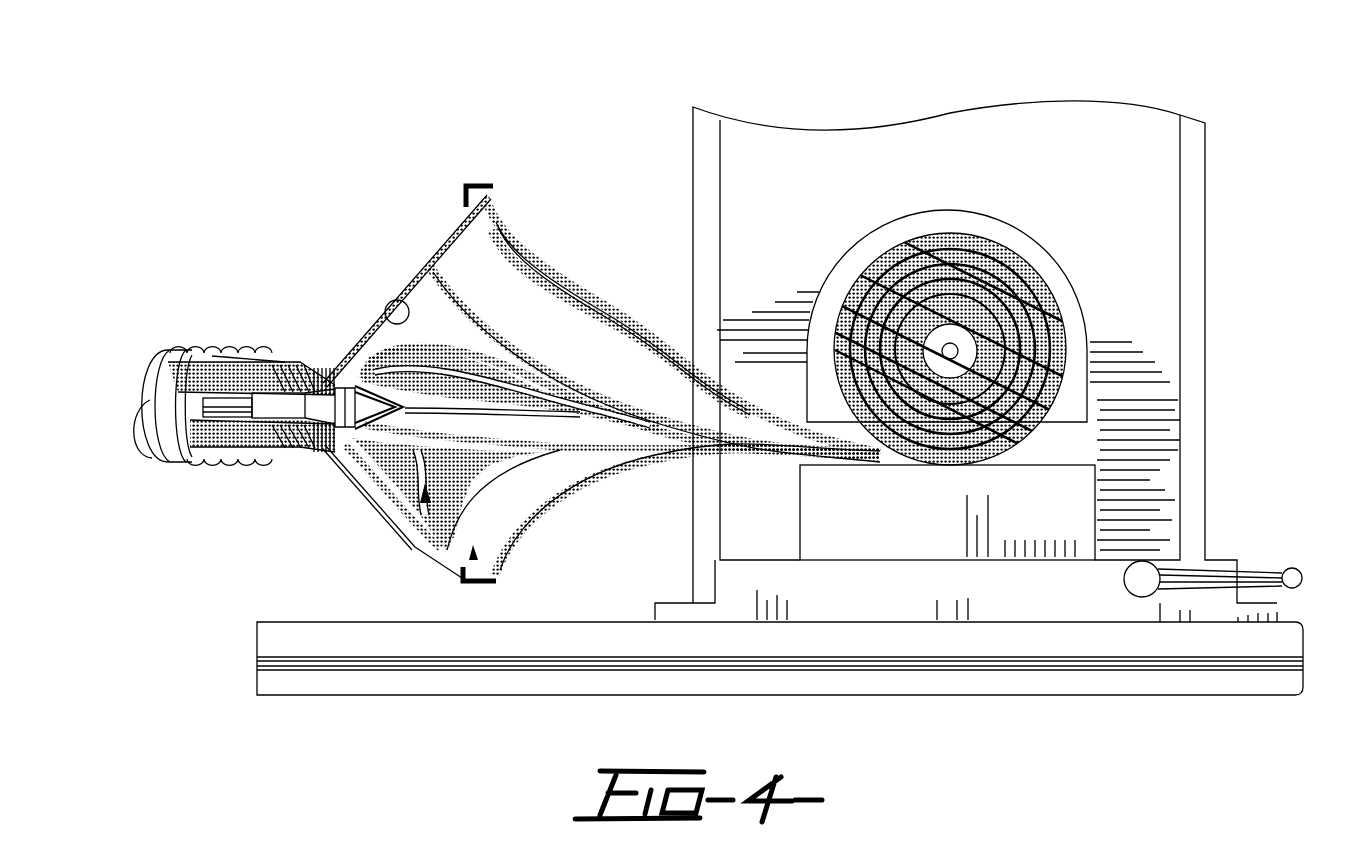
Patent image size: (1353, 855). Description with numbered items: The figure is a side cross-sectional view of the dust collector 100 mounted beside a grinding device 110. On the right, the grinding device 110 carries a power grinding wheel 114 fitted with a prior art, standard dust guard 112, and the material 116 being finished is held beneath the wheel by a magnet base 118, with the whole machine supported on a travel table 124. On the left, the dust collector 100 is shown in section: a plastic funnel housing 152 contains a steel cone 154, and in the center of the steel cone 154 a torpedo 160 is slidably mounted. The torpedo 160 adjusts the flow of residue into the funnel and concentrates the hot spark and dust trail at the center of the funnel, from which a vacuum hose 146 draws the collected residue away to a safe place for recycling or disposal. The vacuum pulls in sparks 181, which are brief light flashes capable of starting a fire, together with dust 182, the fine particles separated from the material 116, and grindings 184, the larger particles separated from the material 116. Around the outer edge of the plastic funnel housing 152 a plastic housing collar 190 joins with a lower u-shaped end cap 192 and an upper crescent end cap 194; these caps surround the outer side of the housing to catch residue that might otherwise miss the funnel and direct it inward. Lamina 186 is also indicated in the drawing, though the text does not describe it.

The dust collector 100 is at (336, 330).
The grinding device 110 is at (1162, 358).
The dust guard 112 is at (1063, 290).
The power grinding wheel 114 is at (1003, 253).
The material 116 is at (1060, 500).
The magnet base 118 is at (1078, 588).
The travel table 124 is at (1000, 632).
The vacuum hose 146 is at (163, 447).
The plastic funnel housing 152 is at (455, 250).
The steel cone 154 is at (400, 290).
The torpedo 160 is at (320, 392).
The sparks 181 is at (200, 378).
The dust 182 is at (703, 700).
The grindings 184 is at (612, 172).
The outer lamina 186 is at (492, 258).
The plastic housing collar 190 is at (482, 185).
The lower u-shaped end cap 192 is at (458, 573).
The upper crescent end cap 194 is at (465, 228).